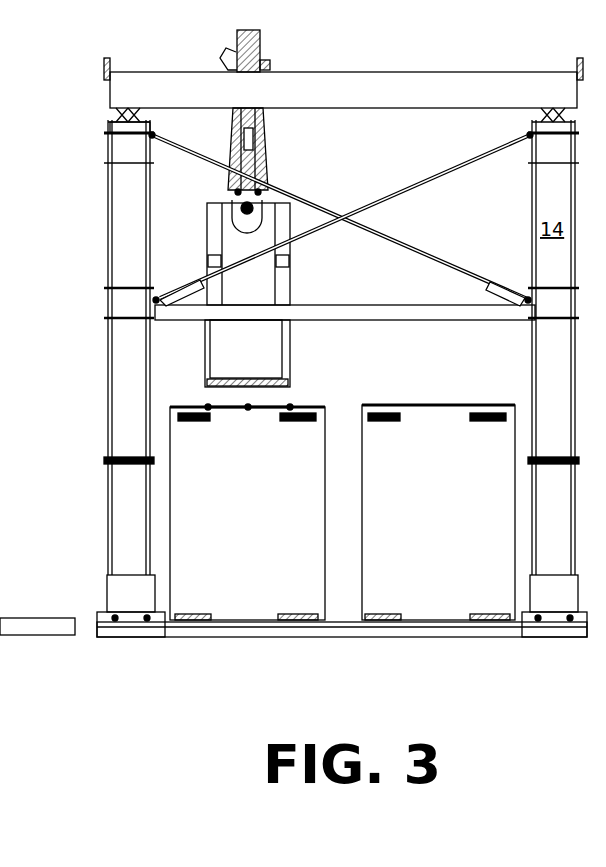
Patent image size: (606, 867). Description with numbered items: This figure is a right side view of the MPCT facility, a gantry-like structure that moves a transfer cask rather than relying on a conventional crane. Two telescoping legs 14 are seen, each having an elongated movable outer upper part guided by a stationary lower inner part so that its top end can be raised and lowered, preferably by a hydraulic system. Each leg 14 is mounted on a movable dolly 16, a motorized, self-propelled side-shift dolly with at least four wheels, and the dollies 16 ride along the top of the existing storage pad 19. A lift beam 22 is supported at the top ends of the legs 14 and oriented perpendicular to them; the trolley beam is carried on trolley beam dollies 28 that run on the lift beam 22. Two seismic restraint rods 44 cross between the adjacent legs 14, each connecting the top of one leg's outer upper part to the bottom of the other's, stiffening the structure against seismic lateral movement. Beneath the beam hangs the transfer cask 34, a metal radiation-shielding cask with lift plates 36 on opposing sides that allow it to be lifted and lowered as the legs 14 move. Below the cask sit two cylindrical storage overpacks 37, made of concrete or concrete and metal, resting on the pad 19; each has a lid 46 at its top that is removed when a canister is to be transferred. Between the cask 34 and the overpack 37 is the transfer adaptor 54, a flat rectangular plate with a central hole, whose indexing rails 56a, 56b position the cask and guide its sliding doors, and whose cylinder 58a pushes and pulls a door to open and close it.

The lift beam 22 is at (343, 83).
The trolley beam dolly 28 is at (120, 126).
The telescoping leg 14 is at (129, 341).
The lift plate 36 is at (252, 210).
The seismic restraint rod 44 is at (452, 175).
The transfer cask 34 is at (345, 295).
The hydraulically or pneumatically operated cylinder 58a is at (260, 406).
The indexing rail 56a is at (190, 406).
The indexing rail 56b is at (292, 405).
The transfer adaptor 54 is at (178, 406).
The lid 46 is at (462, 405).
The storage overpack 37 is at (342, 512).
The movable dolly 16 is at (125, 594).
The storage pad 19 is at (246, 620).